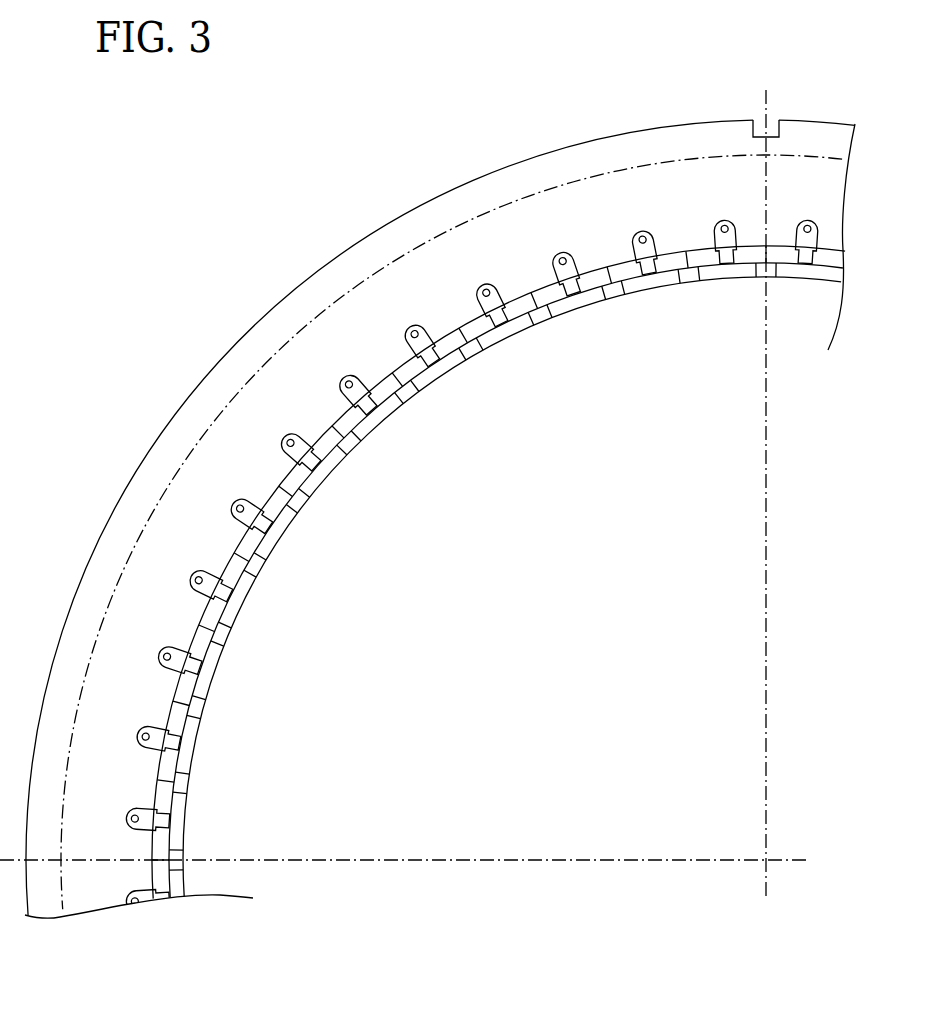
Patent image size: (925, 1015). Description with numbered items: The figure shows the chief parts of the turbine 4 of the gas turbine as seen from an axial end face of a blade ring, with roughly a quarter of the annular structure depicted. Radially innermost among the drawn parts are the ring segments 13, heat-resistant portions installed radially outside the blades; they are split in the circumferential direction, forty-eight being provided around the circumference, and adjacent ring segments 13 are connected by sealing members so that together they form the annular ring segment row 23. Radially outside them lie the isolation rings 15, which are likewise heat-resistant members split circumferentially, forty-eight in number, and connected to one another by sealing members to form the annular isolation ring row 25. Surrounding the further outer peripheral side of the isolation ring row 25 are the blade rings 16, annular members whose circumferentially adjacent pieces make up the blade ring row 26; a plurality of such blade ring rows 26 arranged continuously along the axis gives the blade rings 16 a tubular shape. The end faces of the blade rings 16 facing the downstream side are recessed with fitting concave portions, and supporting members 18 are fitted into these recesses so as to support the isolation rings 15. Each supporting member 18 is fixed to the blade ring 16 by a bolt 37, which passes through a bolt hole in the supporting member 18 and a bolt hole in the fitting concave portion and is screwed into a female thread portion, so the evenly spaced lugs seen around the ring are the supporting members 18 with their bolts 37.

The turbine 4 is at (331, 192).
The ring segment 13 is at (388, 407).
The ring segment row 23 is at (498, 572).
The isolation ring 15 is at (357, 420).
The isolation ring row 25 is at (505, 580).
The blade ring 16 is at (145, 472).
The blade ring row 26 is at (440, 519).
The supporting member 18 is at (350, 367).
The bolt 37 is at (339, 372).